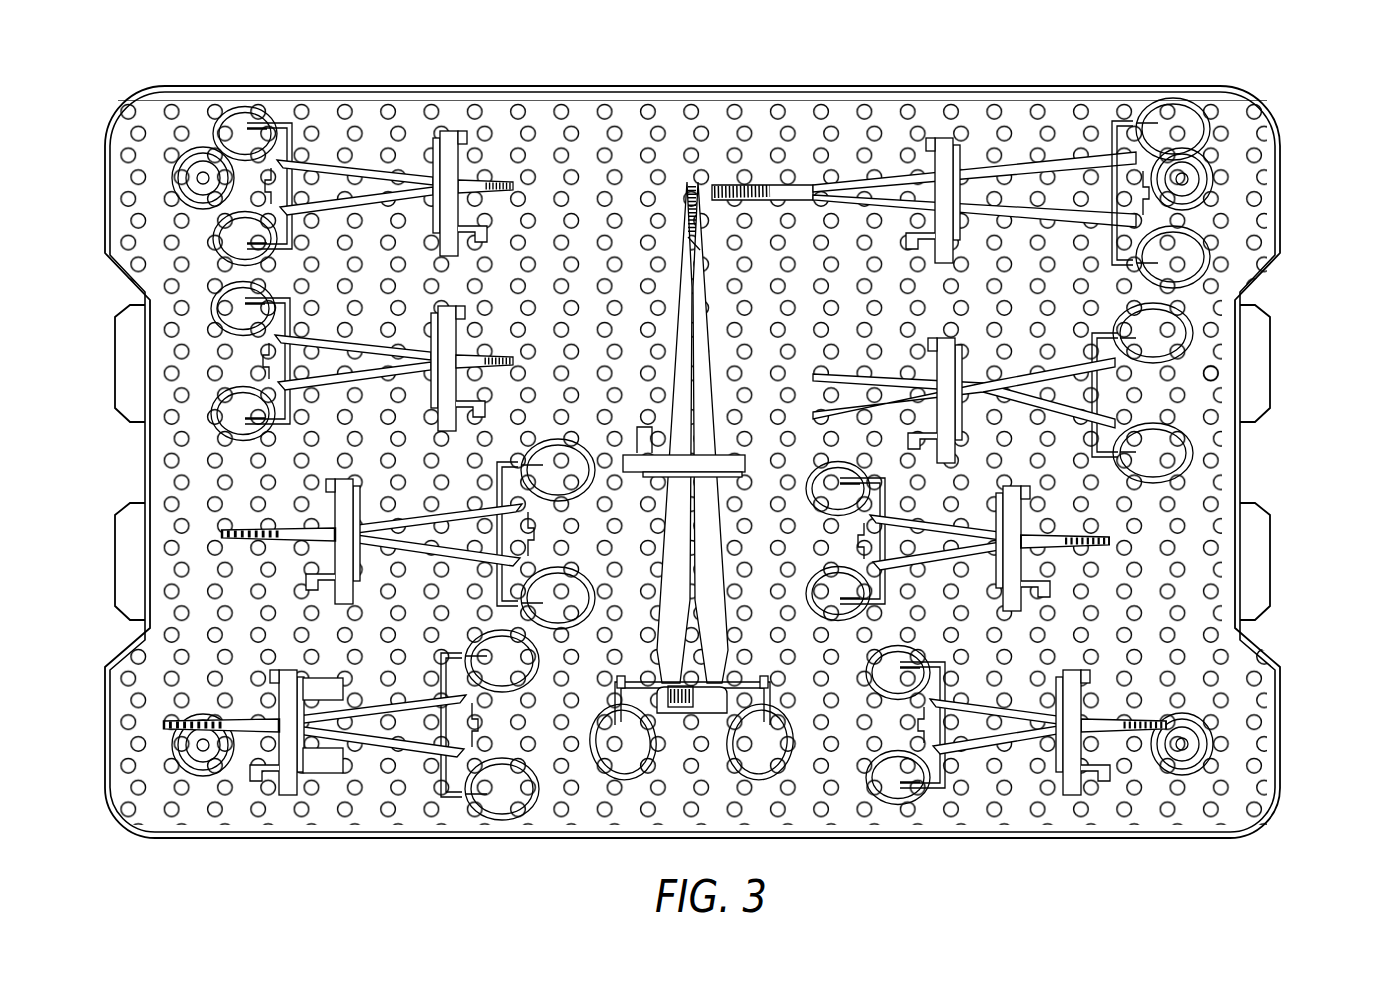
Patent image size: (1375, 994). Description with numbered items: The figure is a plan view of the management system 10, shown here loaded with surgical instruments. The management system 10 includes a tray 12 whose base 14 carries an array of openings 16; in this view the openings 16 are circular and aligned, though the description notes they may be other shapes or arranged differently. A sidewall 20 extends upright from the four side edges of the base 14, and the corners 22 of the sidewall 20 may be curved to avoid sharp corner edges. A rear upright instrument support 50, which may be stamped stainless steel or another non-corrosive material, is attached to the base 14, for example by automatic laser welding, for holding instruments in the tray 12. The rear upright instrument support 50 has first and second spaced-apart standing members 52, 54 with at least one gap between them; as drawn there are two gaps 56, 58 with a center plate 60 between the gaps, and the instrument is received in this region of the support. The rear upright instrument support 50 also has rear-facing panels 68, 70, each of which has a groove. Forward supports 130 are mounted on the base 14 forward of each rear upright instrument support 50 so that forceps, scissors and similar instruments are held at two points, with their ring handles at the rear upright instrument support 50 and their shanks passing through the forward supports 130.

The management system 10 is at (690, 453).
The tray 12 is at (1248, 748).
The base 14 is at (722, 812).
The openings 16 is at (1218, 373).
The sidewall 20 is at (622, 82).
The corners 22 is at (1268, 805).
The rear upright instrument support 50 is at (937, 461).
The first standing member 52 is at (773, 672).
The second standing member 54 is at (615, 672).
The gap 56 is at (627, 682).
The gap 58 is at (755, 682).
The center plate 60 is at (695, 687).
The rear-facing panel 68 is at (618, 737).
The rear-facing panel 70 is at (743, 735).
The forward support 130 is at (447, 130).